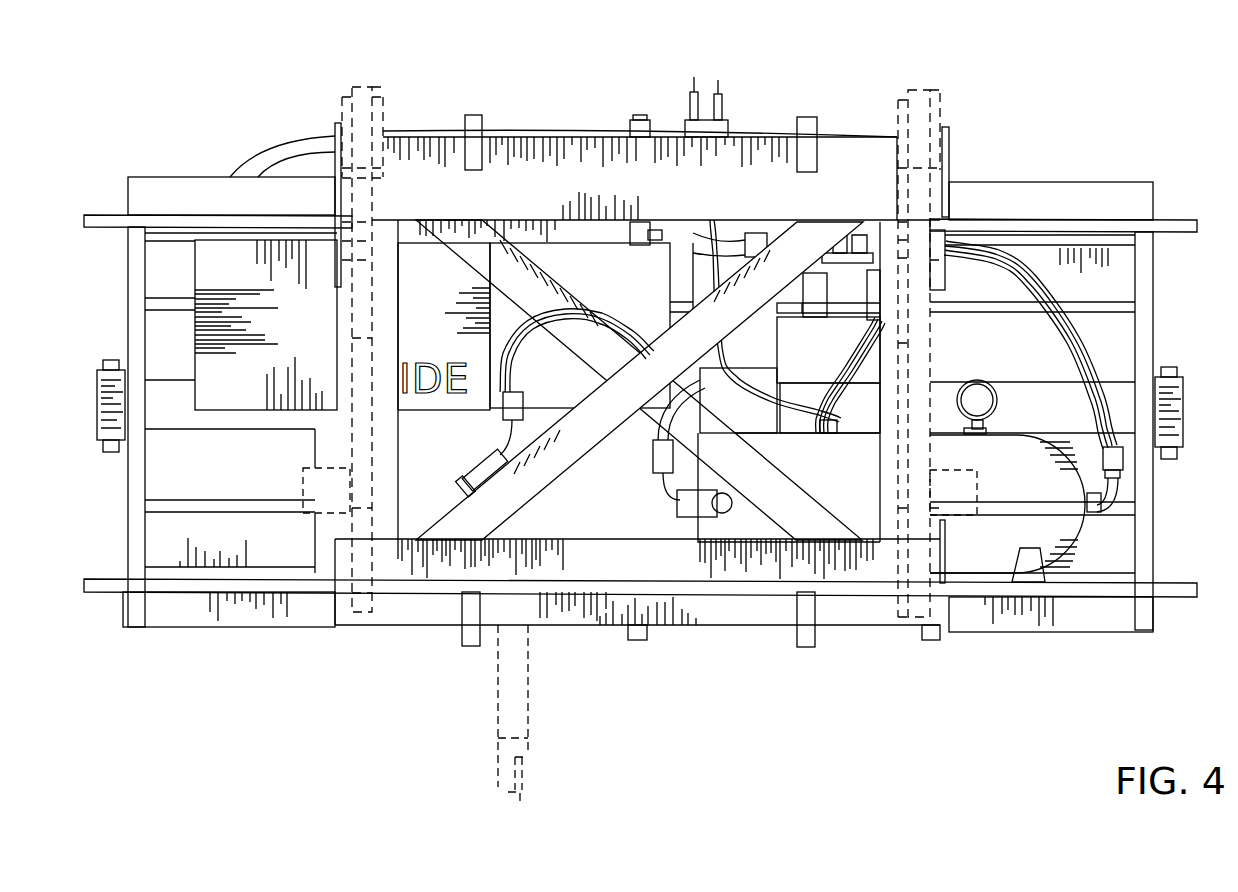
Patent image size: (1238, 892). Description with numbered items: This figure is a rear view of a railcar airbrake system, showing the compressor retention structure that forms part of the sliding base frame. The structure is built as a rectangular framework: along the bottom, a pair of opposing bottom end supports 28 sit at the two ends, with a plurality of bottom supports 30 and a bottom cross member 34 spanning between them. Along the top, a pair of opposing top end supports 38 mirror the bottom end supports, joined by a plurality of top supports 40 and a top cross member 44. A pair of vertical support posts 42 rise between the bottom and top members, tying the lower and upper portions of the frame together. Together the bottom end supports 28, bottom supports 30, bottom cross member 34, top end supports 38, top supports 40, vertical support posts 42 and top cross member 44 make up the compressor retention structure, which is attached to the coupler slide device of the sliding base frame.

The bottom end support 28 is at (160, 622).
The bottom support 30 is at (473, 648).
The bottom cross member 34 is at (687, 617).
The top end support 38 is at (165, 193).
The top support 40 is at (473, 115).
The vertical support post 42 is at (383, 525).
The top cross member 44 is at (852, 165).